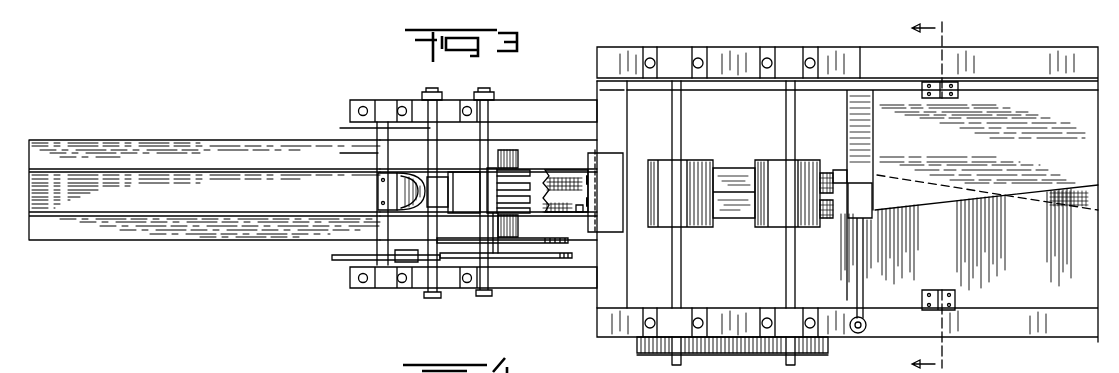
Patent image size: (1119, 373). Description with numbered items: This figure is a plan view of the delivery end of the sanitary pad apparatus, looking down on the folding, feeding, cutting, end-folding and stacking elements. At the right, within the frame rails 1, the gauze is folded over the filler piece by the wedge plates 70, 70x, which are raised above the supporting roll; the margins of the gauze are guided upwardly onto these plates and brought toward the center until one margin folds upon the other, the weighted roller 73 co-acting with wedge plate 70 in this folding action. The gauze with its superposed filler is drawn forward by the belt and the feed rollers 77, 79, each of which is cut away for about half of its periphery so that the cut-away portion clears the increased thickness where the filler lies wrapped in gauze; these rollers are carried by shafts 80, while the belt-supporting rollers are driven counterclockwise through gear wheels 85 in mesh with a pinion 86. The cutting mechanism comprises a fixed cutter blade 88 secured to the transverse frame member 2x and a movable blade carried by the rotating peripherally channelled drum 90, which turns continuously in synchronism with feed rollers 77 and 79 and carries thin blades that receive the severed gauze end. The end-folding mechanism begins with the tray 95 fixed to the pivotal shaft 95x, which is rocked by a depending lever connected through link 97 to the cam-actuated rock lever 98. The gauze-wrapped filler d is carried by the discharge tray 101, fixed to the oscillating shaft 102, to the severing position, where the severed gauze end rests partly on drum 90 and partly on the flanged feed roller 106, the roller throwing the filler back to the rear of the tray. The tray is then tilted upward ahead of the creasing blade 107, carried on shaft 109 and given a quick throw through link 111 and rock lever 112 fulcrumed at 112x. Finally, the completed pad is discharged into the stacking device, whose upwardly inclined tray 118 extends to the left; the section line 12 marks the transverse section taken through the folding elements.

The frame rail 1 is at (855, 62).
The transverse frame member 2x is at (612, 116).
The section line 12 is at (938, 196).
The wedge plate 70 is at (862, 195).
The wedge plate 70x is at (969, 232).
The weighted roller 73 is at (848, 210).
The feed roller 77 is at (680, 266).
The feed roller 79 is at (793, 266).
The shaft 80 is at (786, 268).
The gear wheel 85 is at (850, 357).
The pinion 86 is at (742, 350).
The fixed cutter blade 88 is at (588, 195).
The rotating peripherally channelled drum 90 is at (565, 153).
The tray 95 is at (516, 185).
The pivotal shaft 95x is at (509, 150).
The link 97 is at (466, 243).
The rock lever 98 is at (502, 245).
The discharge tray 101 is at (410, 172).
The shaft 102 is at (385, 202).
The flanged feed roller 106 is at (457, 175).
The creasing blade 107 is at (447, 190).
The shaft 109 is at (430, 298).
The link 111 is at (402, 256).
The rock lever 112 is at (343, 262).
The fulcrum 112x is at (528, 260).
The upwardly inclined tray 118 is at (108, 242).
The gauze-wrapped filler d is at (580, 208).